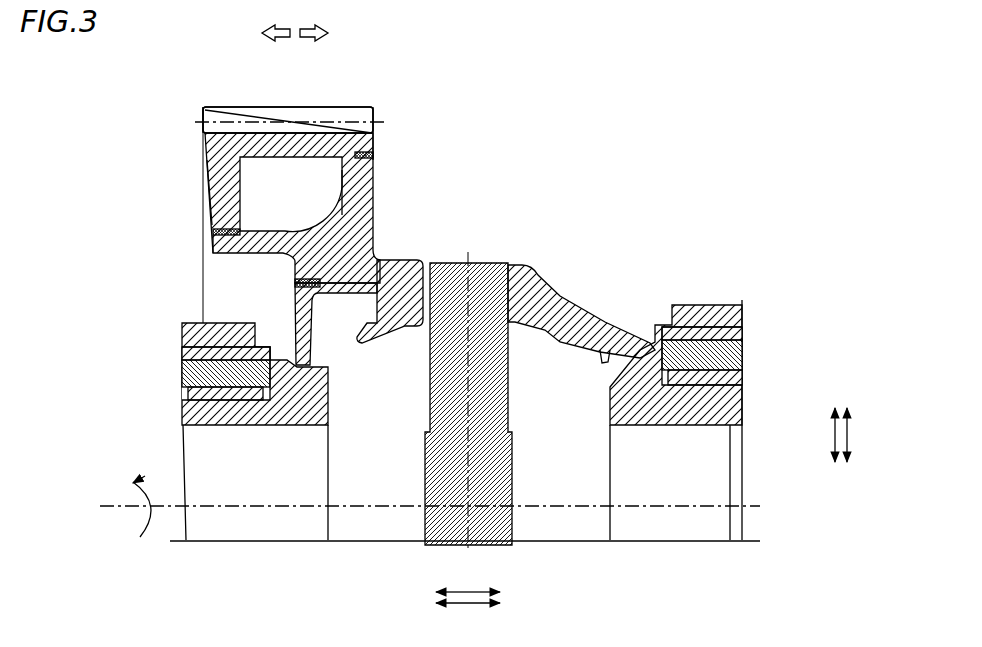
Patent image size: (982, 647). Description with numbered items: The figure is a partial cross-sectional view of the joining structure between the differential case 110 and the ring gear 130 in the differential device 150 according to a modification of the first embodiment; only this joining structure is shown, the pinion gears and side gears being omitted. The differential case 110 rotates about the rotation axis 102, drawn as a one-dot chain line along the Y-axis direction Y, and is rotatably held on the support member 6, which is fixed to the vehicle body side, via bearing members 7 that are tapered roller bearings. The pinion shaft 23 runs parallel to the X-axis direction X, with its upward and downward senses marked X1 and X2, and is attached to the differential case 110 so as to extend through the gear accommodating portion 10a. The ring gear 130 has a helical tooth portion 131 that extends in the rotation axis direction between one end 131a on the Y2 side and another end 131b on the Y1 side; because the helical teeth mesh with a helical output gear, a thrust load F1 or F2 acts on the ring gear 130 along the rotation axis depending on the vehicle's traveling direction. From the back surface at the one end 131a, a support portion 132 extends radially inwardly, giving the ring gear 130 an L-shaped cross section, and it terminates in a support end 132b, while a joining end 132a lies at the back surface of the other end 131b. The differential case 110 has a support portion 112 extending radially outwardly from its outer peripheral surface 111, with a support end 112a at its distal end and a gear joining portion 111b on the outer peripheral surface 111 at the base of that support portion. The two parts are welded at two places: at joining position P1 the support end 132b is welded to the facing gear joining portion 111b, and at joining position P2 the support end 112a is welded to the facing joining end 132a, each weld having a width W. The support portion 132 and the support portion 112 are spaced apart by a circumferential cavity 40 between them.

The ring gear 130 is at (378, 140).
The helical tooth portion 131 is at (281, 104).
The one end 131a is at (213, 107).
The other end 131b is at (362, 107).
The support portion 132 is at (210, 172).
The joining end 132a is at (386, 127).
The support end 132b is at (205, 220).
The support portion 112 is at (380, 205).
The support end 112a is at (358, 195).
The outer peripheral surface 111 is at (405, 262).
The gear joining portion 111b is at (215, 258).
The differential case 110 is at (575, 320).
The gear accommodating portion 10a is at (612, 355).
The pinion shaft 23 is at (548, 282).
The circumferential cavity 40 is at (272, 232).
The support member 6 is at (182, 332).
The bearing members 7 is at (182, 366).
The differential device 150 is at (818, 110).
The rotation axis 102 is at (122, 490).
The contact width W is at (213, 237).
The joining position P1 is at (205, 232).
The joining position P2 is at (380, 155).
The thrust load F1 is at (314, 21).
The thrust load F2 is at (277, 21).
The X-axis direction X is at (820, 435).
The upward direction X1 is at (867, 422).
The downward direction X2 is at (867, 450).
The Y-axis direction Y is at (468, 614).
The Y1 side Y1 is at (484, 574).
The Y2 side Y2 is at (452, 574).